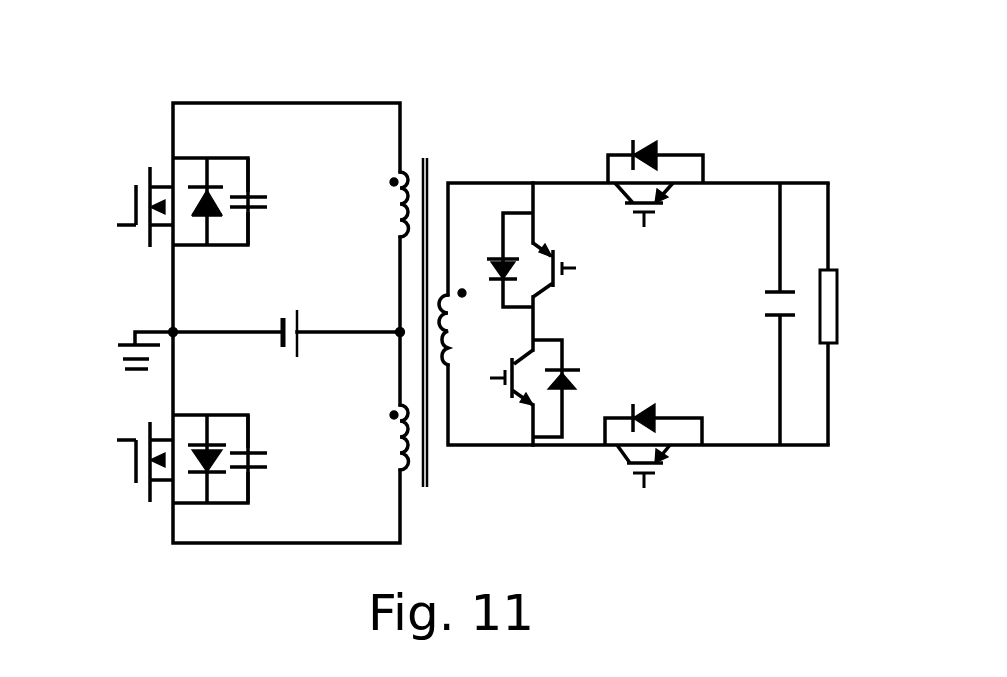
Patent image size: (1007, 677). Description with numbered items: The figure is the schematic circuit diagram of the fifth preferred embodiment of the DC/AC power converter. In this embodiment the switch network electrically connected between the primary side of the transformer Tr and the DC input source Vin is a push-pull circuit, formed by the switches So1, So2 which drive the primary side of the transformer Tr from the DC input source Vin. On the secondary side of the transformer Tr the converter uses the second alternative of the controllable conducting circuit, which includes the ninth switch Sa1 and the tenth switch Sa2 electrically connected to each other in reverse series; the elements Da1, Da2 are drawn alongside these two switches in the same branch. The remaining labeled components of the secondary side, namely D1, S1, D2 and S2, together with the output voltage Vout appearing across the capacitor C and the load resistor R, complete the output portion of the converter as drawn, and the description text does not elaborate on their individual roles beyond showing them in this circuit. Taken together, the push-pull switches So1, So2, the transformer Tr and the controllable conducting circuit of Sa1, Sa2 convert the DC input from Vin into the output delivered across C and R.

The switch So1 is at (172, 202).
The switch So2 is at (169, 459).
The DC input source Vin is at (284, 317).
The transformer Tr is at (428, 295).
The auxiliary diode 1 Da1 is at (494, 260).
The ninth switch Sa1 is at (563, 258).
The tenth switch Sa2 is at (491, 374).
The auxiliary diode 2 Da2 is at (581, 388).
The rectifier diode 1 D1 is at (655, 146).
The secondary switch 1 (IGBT) S1 is at (644, 223).
The rectifier diode 2 D2 is at (653, 404).
The secondary switch 2 (IGBT) S2 is at (643, 485).
The output voltage Vout is at (742, 234).
The output capacitor C is at (761, 314).
The load resistor R is at (844, 314).